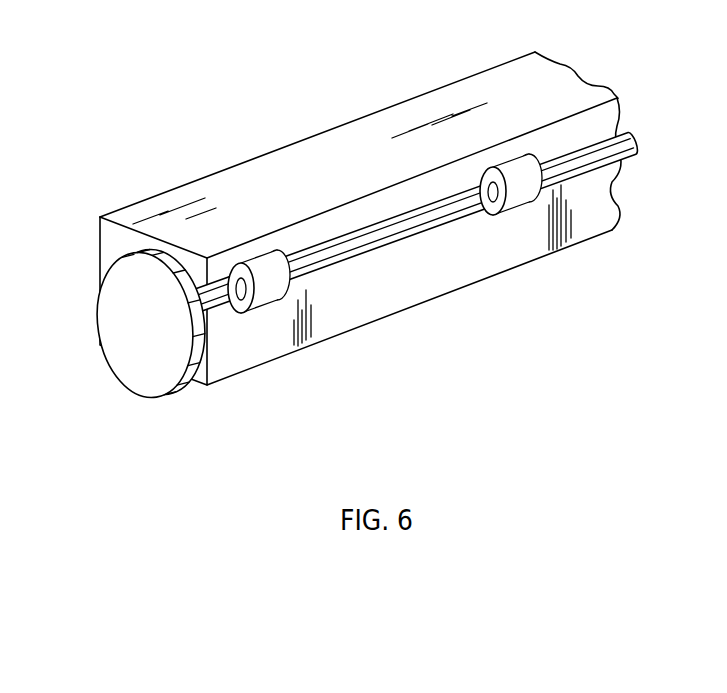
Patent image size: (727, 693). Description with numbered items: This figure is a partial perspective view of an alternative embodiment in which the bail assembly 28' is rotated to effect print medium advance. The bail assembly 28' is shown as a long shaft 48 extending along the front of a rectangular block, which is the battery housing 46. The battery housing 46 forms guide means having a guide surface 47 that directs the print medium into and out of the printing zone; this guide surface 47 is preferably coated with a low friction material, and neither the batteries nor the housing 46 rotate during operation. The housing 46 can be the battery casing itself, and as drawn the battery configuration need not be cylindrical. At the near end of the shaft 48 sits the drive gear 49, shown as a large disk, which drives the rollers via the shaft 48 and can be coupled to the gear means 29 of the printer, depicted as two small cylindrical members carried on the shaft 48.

The battery housing 46 is at (553, 99).
The guide surface 47 is at (408, 286).
The shaft 48 is at (345, 262).
The bail assembly 28' is at (426, 224).
The gear means 29 is at (263, 311).
The drive gear 49 is at (143, 344).